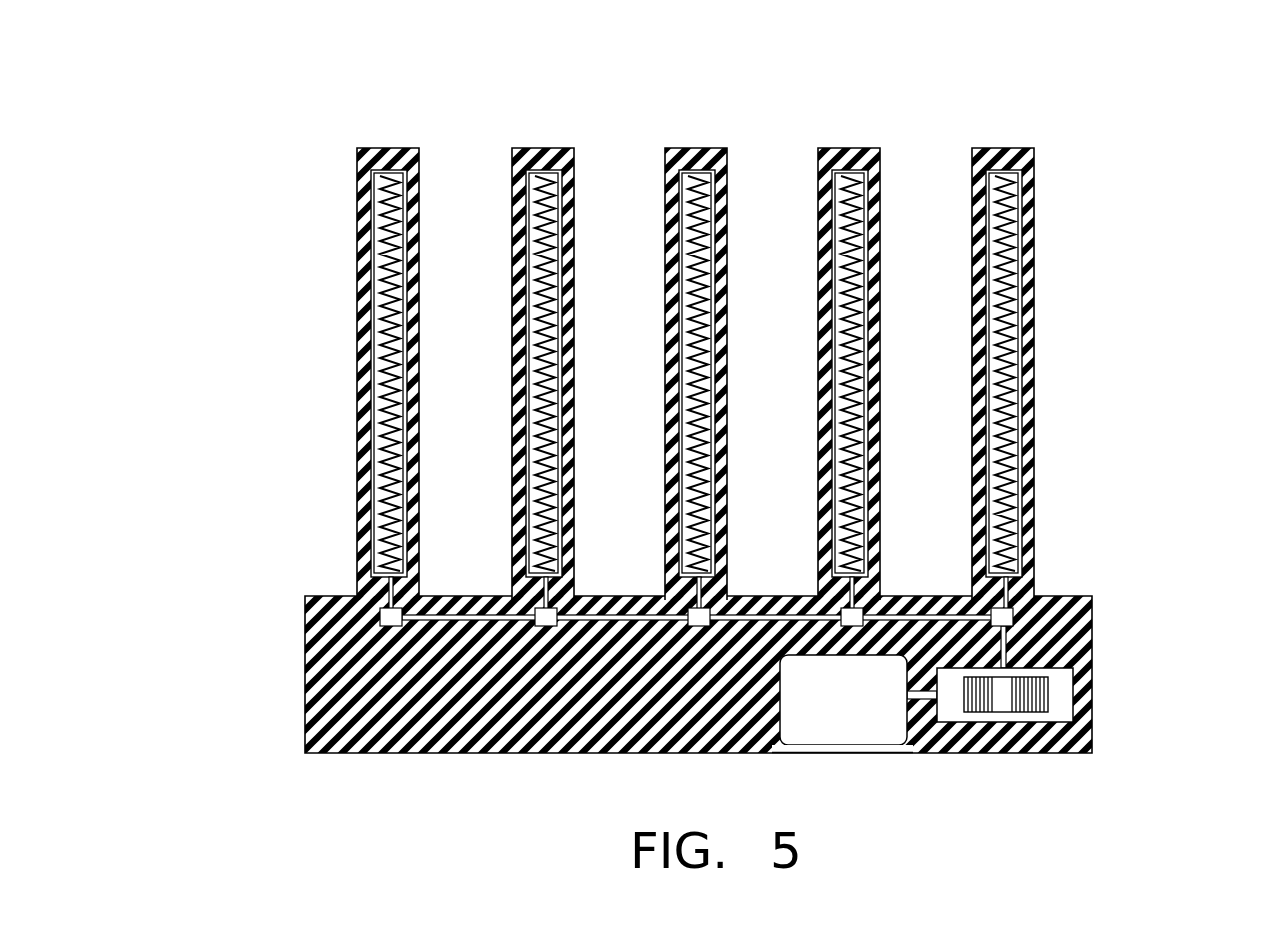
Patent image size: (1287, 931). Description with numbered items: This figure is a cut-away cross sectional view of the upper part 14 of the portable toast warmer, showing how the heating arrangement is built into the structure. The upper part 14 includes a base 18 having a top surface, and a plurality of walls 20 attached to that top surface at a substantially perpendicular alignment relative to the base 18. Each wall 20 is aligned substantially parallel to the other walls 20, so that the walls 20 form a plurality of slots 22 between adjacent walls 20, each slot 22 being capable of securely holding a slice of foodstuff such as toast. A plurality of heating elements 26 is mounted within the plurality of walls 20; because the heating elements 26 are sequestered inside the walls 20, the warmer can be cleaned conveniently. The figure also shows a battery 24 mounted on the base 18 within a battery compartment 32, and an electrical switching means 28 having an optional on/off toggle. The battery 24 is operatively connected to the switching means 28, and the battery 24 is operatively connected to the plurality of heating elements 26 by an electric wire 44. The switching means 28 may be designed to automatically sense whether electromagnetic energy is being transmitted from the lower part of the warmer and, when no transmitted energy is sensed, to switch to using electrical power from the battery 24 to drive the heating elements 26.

The upper part 14 is at (1172, 330).
The base 18 is at (363, 713).
The walls 20 is at (384, 148).
The slots 22 is at (932, 380).
The battery 24 is at (867, 716).
The heating elements 26 is at (1003, 273).
The electrical switching means 28 is at (1017, 697).
The battery compartment 32 is at (828, 752).
The electric wire 44 is at (740, 617).